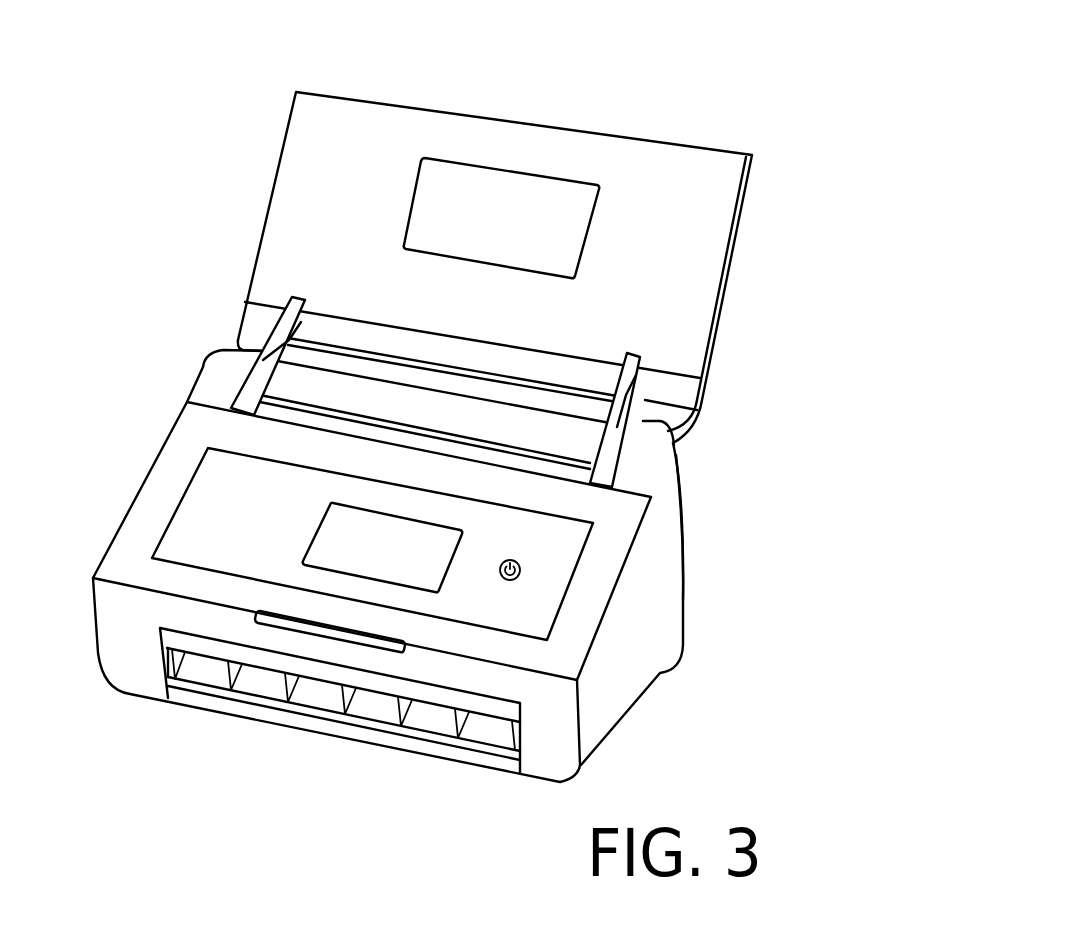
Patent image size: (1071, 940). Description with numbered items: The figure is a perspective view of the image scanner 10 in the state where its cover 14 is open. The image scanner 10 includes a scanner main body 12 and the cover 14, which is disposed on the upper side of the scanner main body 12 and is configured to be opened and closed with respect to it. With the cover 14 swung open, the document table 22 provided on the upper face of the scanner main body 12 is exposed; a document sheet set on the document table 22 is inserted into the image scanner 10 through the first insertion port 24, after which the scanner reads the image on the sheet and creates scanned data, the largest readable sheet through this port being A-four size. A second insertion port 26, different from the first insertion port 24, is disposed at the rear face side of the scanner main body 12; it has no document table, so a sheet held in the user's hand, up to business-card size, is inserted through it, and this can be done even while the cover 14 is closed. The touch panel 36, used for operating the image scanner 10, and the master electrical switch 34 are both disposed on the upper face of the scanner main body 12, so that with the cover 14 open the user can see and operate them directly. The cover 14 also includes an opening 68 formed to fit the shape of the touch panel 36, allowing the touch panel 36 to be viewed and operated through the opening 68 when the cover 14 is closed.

The image scanner 10 is at (435, 403).
The scanner main body 12 is at (630, 663).
The cover 14 is at (495, 233).
The document table 22 is at (555, 400).
The first insertion port 24 is at (273, 412).
The second insertion port 26 is at (693, 473).
The master electrical switch 34 is at (537, 562).
The touch panel 36 is at (305, 522).
The opening 68 is at (512, 170).